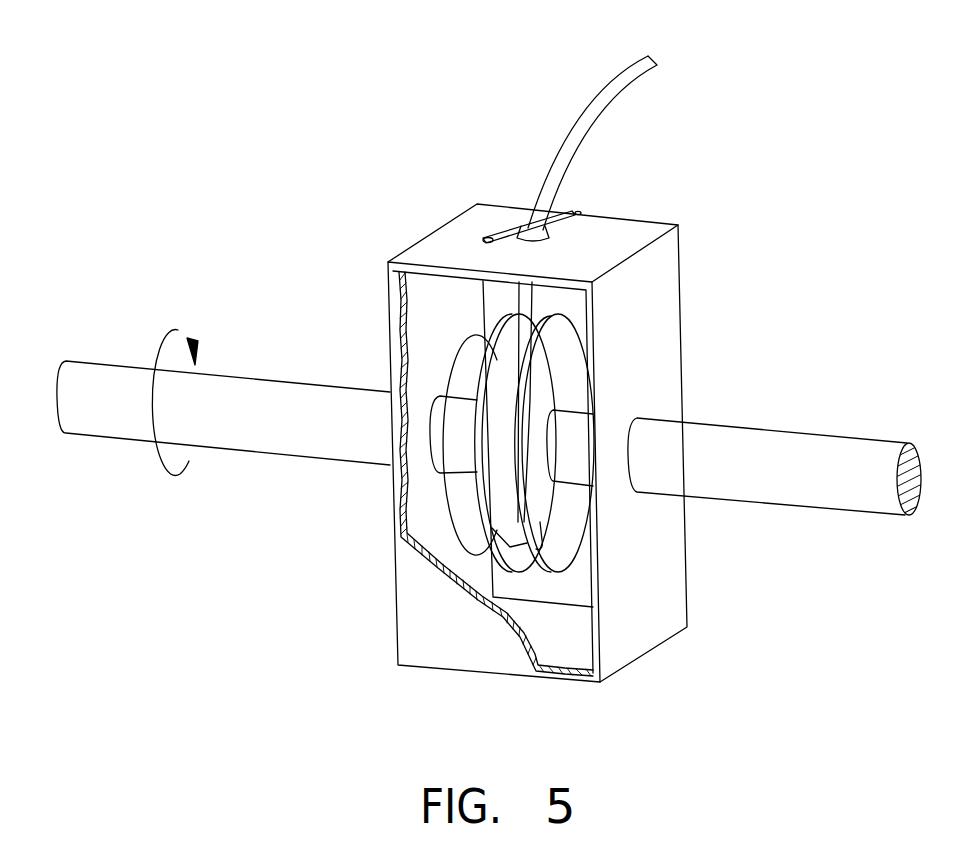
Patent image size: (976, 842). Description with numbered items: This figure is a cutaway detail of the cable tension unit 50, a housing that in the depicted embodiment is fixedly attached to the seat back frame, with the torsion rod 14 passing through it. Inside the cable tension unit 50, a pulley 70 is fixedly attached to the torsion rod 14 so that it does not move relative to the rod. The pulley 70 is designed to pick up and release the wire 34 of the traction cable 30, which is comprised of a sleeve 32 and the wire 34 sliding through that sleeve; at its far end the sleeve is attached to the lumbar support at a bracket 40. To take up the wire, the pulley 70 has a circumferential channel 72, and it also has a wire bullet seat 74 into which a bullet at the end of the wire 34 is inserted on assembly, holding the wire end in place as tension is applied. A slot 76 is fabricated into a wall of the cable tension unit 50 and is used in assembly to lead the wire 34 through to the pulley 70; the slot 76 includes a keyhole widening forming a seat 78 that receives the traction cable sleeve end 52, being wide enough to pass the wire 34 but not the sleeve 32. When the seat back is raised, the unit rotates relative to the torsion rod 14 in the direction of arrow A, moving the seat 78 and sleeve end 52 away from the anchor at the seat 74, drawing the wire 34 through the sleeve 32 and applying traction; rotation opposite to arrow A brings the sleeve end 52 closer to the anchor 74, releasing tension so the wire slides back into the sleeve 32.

The torsion rod 14 is at (780, 428).
The traction cable 30 is at (603, 62).
The traction cable sleeve 32 is at (577, 127).
The traction cable wire 34 is at (523, 298).
The bracket 40 is at (645, 629).
The cable tension unit 50 is at (716, 112).
The traction cable sleeve end 52 is at (505, 223).
The pulley 70 is at (567, 374).
The circumferential channel 72 is at (507, 336).
The wire bullet seat 74 is at (545, 530).
The slot 76 is at (582, 215).
The keyhole seat 78 is at (483, 241).
The arrow A is at (155, 466).